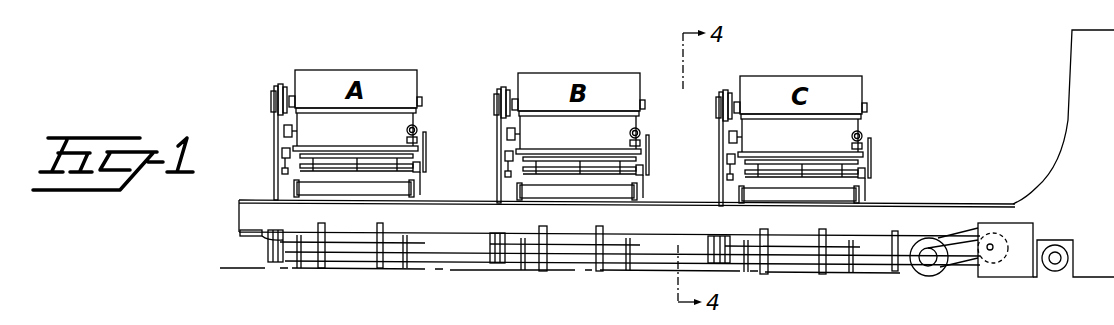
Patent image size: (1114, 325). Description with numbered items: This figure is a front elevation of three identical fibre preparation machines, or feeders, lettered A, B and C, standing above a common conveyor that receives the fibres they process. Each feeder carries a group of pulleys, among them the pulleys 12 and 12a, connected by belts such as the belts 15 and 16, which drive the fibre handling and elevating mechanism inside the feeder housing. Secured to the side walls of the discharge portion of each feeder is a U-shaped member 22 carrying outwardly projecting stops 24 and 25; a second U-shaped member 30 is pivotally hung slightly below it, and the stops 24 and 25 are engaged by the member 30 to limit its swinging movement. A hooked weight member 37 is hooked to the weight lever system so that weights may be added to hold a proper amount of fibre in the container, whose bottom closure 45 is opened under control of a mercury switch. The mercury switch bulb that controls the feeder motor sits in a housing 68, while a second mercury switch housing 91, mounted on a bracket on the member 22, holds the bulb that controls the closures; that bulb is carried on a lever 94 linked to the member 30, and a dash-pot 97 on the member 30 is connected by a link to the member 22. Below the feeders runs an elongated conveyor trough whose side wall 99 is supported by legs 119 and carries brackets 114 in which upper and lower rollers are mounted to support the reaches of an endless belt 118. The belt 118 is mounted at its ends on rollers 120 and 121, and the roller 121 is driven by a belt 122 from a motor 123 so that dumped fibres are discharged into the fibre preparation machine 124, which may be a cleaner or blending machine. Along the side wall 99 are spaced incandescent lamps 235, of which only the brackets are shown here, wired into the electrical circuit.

The pulley 12 is at (288, 88).
The pulley 12a is at (271, 101).
The belt 15 is at (274, 153).
The belt 16 is at (281, 84).
The U-shaped member 22 is at (333, 149).
The stop 24 is at (360, 152).
The stop 25 is at (360, 166).
The second U-shaped member 30 is at (318, 164).
The hooked weight member 37 is at (282, 171).
The closure 45 is at (345, 196).
The housing 68 is at (293, 129).
The mercury switch housing 91 is at (417, 129).
The lever 94 is at (426, 136).
The dash-pot 97 is at (421, 168).
The side wall 99 is at (950, 214).
The bracket 114 is at (381, 268).
The endless belt 118 is at (665, 264).
The leg 119 is at (322, 268).
The roller 120 is at (252, 243).
The roller 121 is at (1003, 237).
The belt 122 is at (958, 269).
The motor 123 is at (922, 275).
The fibre preparation machine 124 is at (1067, 128).
The incandescent lamp 235 is at (484, 234).